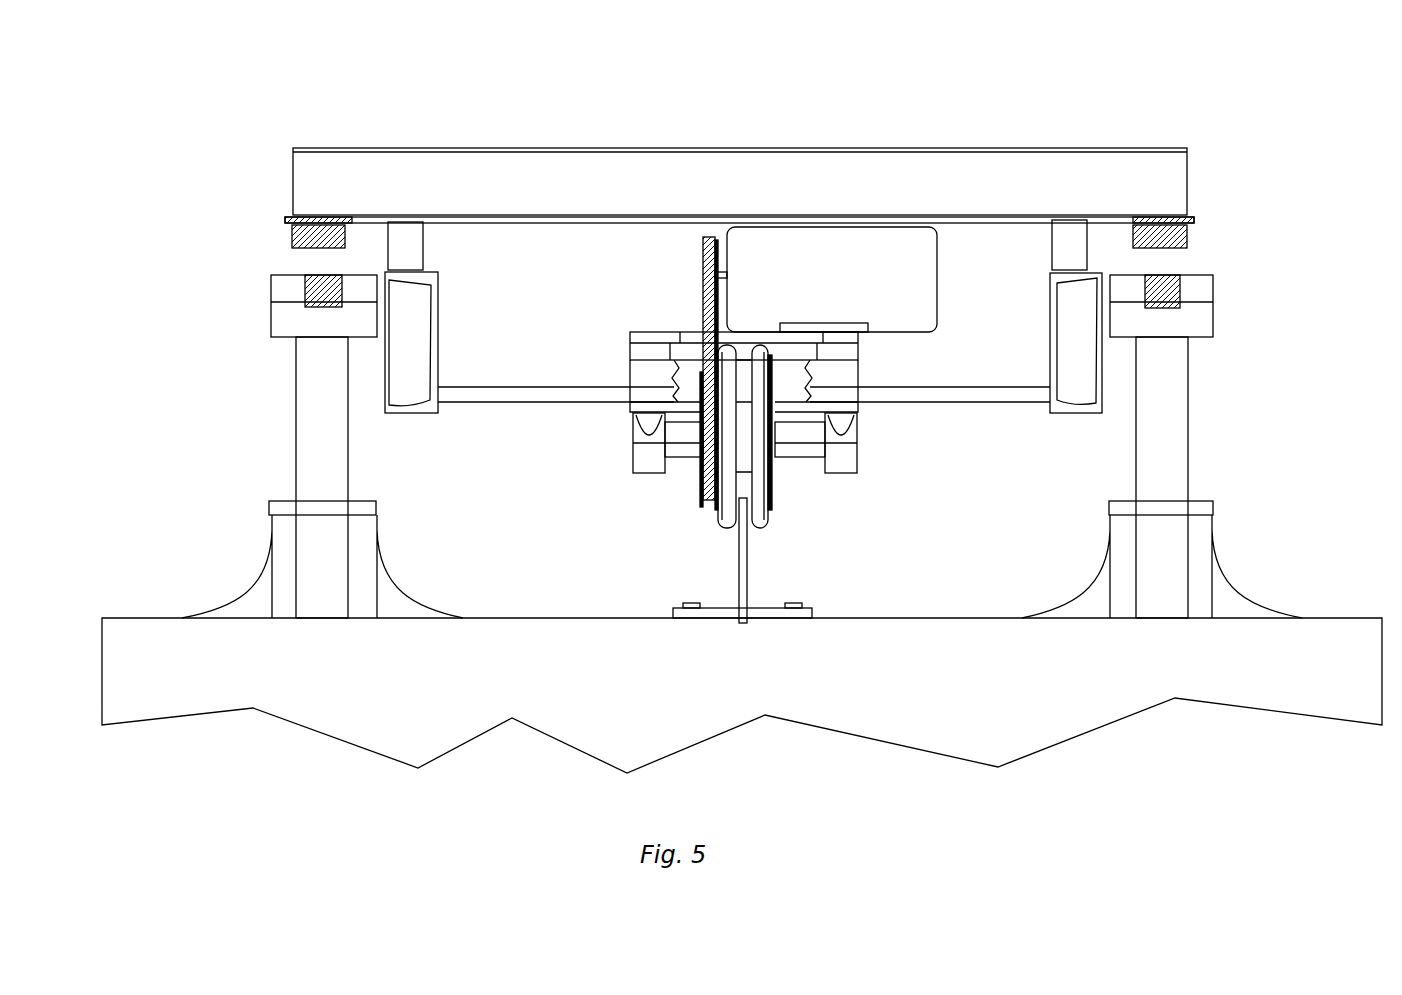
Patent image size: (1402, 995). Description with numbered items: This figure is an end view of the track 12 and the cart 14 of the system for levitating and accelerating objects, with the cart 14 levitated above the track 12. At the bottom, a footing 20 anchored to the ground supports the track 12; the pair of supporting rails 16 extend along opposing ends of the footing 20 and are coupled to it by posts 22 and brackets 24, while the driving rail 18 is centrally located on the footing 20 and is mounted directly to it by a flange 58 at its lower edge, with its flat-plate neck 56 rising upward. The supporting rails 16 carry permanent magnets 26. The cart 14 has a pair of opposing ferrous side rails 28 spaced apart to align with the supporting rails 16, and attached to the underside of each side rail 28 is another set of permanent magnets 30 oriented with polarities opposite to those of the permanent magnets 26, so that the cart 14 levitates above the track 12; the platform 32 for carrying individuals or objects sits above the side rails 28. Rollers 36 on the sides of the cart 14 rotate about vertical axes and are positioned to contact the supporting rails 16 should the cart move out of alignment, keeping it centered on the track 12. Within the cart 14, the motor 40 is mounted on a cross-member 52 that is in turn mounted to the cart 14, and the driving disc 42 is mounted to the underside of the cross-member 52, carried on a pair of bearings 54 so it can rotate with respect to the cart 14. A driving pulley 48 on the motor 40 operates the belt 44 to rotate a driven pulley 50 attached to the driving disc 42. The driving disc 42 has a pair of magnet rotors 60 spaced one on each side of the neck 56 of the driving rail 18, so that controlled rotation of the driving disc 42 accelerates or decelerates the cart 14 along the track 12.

The track 12 is at (833, 777).
The cart 14 is at (625, 108).
The supporting rails 16 is at (1213, 325).
The driving rail 18 is at (762, 563).
The footings 20 is at (1330, 618).
The posts 22 is at (1188, 438).
The brackets 24 is at (1222, 578).
The permanent magnets 26 is at (1180, 292).
The side rails 28 is at (1194, 222).
The permanent magnets 30 is at (1187, 238).
The platform 32 is at (792, 148).
The rollers 36 is at (1187, 185).
The motor 40 is at (937, 285).
The driving disc 42 is at (780, 515).
The belt 44 is at (703, 318).
The driving pulley 48 is at (703, 258).
The driven pulley 50 is at (700, 485).
The cross-member 52 is at (905, 400).
The bearings 54 is at (632, 465).
The neck 56 is at (739, 555).
The flange 58 is at (790, 618).
The magnet rotors 60 is at (718, 517).